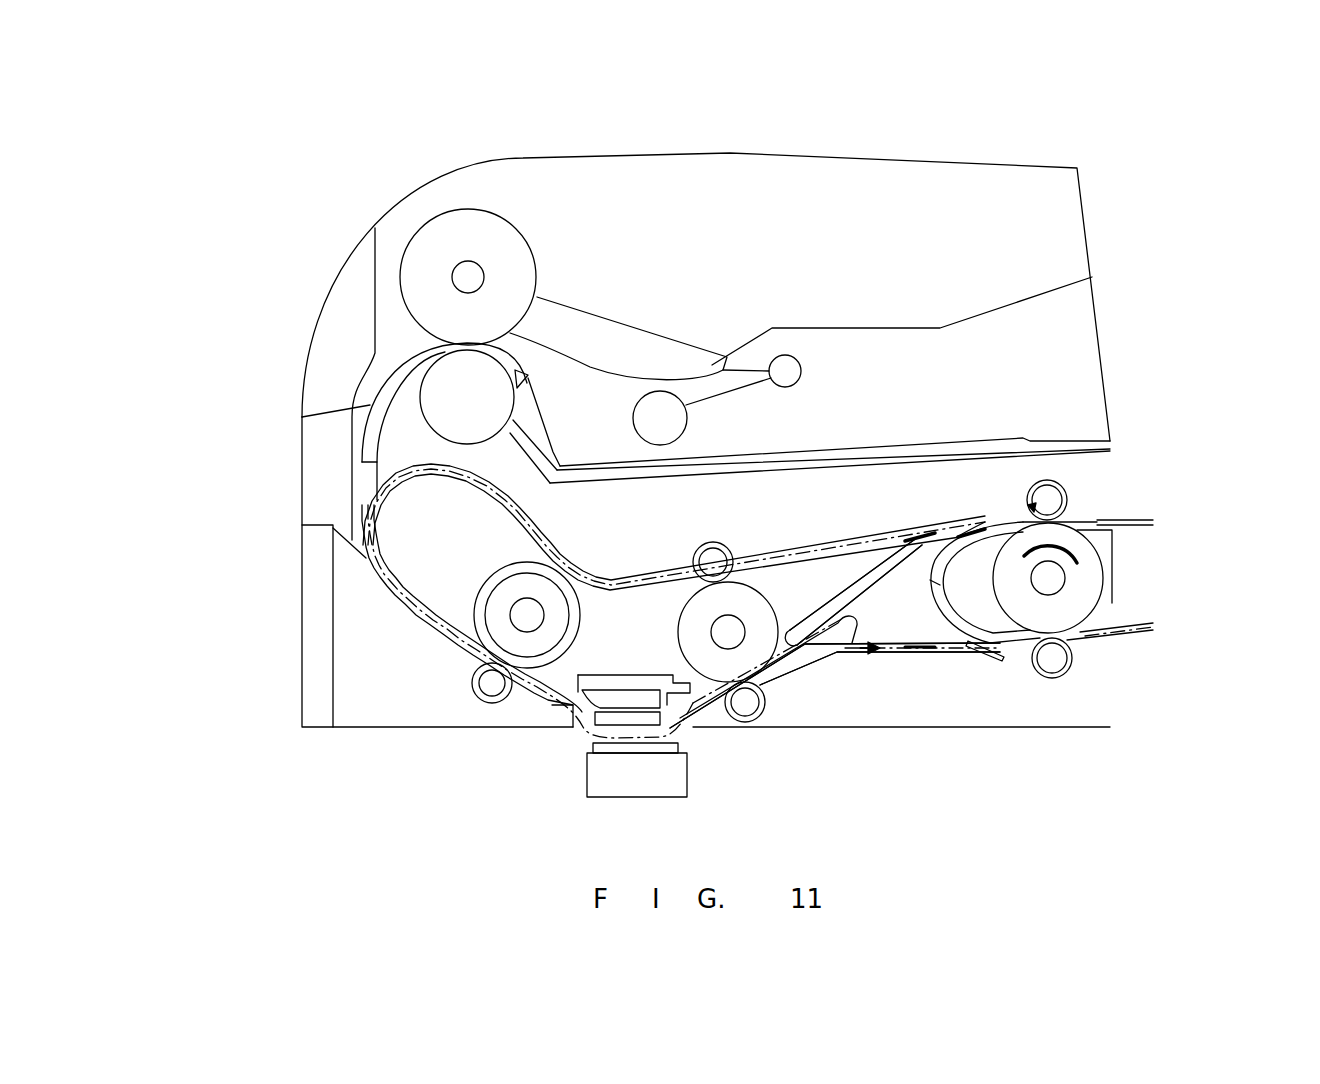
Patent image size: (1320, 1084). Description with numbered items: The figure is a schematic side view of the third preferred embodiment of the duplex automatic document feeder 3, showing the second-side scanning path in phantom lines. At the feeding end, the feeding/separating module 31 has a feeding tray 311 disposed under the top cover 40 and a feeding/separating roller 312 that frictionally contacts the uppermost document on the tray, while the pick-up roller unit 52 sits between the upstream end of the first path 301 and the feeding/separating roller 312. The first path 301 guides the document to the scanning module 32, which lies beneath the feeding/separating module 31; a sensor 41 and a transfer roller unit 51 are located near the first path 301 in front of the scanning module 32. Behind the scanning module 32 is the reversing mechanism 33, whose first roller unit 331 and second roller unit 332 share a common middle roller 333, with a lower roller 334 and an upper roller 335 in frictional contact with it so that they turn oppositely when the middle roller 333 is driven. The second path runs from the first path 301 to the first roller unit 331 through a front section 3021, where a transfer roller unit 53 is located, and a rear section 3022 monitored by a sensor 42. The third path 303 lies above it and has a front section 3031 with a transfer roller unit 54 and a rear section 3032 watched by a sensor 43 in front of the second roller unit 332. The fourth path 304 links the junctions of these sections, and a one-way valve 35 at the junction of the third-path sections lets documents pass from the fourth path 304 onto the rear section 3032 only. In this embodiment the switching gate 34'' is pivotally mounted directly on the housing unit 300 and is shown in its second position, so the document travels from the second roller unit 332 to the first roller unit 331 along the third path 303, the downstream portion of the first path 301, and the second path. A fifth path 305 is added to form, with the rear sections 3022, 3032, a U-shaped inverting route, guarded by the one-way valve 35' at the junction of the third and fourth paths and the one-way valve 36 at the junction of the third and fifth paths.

The duplex automatic document feeder 3 is at (826, 144).
The top cover 40 is at (525, 200).
The housing unit 300 is at (322, 643).
The feeding/separating module 31 is at (815, 314).
The feeding tray 311 is at (1055, 437).
The pick-up roller unit 52 is at (425, 232).
The feeding/separating roller 312 is at (652, 405).
The first path 301 is at (375, 400).
The front section of the third path 3031 is at (588, 580).
The third path 303 is at (797, 559).
The transfer roller unit 54 is at (700, 553).
The fourth path 304 is at (820, 590).
The transfer roller unit 53 is at (760, 705).
The transfer roller unit 51 is at (478, 687).
The sensor 41 is at (545, 703).
The front section of the second path 3021 is at (695, 703).
The scanning module 32 is at (620, 770).
The switching gate 34'' is at (835, 672).
The one-way valve 35' is at (853, 576).
The reversing mechanism 33 is at (1142, 585).
The middle roller 333 is at (1085, 600).
The upper roller 335 is at (1068, 502).
The lower roller 334 is at (1060, 670).
The second roller unit 332 is at (1100, 518).
The first roller unit 331 is at (1101, 645).
The rear section of the third path 3032 is at (952, 530).
The one-way valve 36 is at (977, 540).
The fifth path 305 is at (930, 580).
The one-way valve 35 is at (988, 682).
The rear section of the second path 3022 is at (908, 650).
The sensor 42 is at (1015, 658).
The sensor 43 is at (1003, 513).